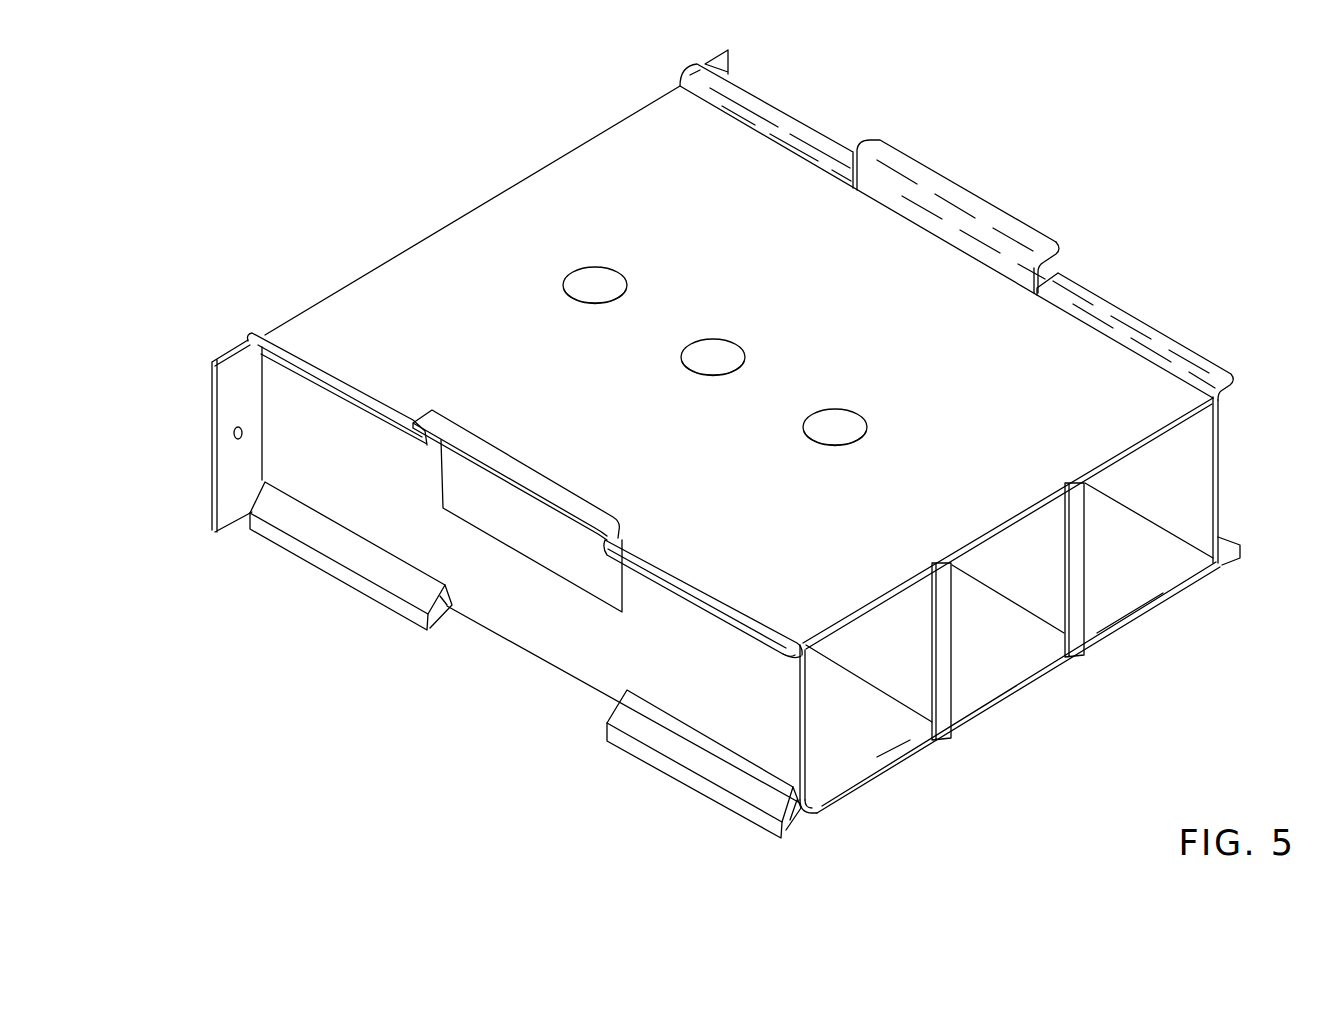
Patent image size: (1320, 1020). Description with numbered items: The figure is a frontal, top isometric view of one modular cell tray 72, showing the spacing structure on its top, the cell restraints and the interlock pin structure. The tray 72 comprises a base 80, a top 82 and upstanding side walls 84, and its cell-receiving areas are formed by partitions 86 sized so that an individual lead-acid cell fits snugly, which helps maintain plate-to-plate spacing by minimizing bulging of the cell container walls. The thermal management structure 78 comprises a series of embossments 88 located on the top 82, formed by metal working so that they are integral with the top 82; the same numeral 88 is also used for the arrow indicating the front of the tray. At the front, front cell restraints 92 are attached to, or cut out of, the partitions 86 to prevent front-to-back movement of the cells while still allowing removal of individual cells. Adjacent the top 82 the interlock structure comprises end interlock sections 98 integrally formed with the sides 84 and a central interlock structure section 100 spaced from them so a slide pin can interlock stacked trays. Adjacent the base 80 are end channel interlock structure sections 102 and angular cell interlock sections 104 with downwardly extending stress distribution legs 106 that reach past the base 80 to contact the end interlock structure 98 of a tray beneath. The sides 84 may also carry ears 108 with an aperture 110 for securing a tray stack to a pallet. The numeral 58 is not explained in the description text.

The side wall edge 58 is at (757, 627).
The modular cell tray 72 is at (385, 221).
The thermal management structure 78 is at (485, 230).
The base 80 is at (905, 770).
The top 82 is at (705, 521).
The upstanding side walls 84 is at (1225, 490).
The partitions 86 is at (918, 690).
The embossments 88 is at (608, 286).
The front cell restraints 92 is at (945, 700).
The end interlock sections 98 is at (297, 350).
The central interlock structure section 100 is at (560, 487).
The end channel interlock structure sections 102 is at (432, 625).
The angular cell interlock sections 104 is at (382, 574).
The stress distribution legs 106 is at (333, 576).
The ears 108 is at (229, 353).
The aperture 110 is at (232, 440).